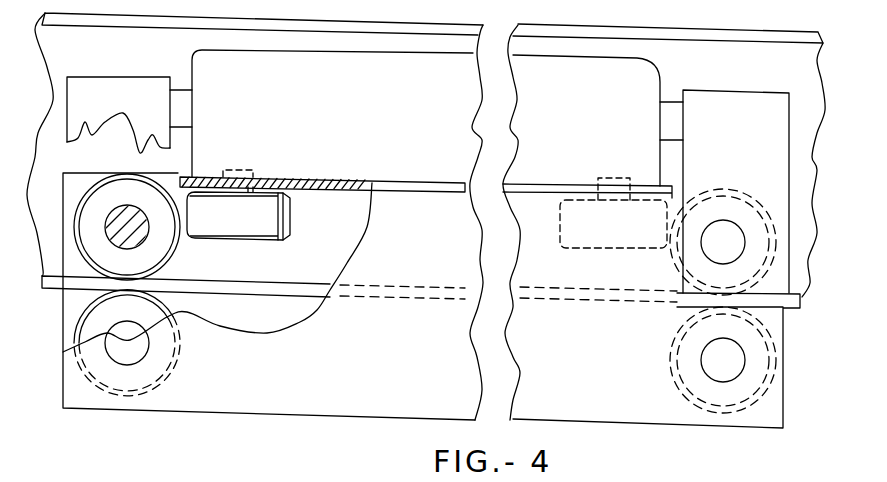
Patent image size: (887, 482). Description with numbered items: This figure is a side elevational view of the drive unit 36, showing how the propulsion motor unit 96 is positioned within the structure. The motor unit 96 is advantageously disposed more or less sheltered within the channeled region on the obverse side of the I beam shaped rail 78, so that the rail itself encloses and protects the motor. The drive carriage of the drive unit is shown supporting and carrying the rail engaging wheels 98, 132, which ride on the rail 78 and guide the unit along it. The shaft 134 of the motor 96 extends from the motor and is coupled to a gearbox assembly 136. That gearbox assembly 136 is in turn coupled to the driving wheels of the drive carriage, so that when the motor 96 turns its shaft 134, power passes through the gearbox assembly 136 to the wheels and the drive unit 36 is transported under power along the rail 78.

The drive unit 36 is at (714, 79).
The I beam shaped rail 78 is at (610, 25).
The propulsion motor unit 96 is at (374, 99).
The rail engaging wheels 98 is at (688, 317).
The rail engaging wheels 132 is at (240, 240).
The shaft 134 is at (180, 90).
The gearbox assembly 136 is at (107, 77).